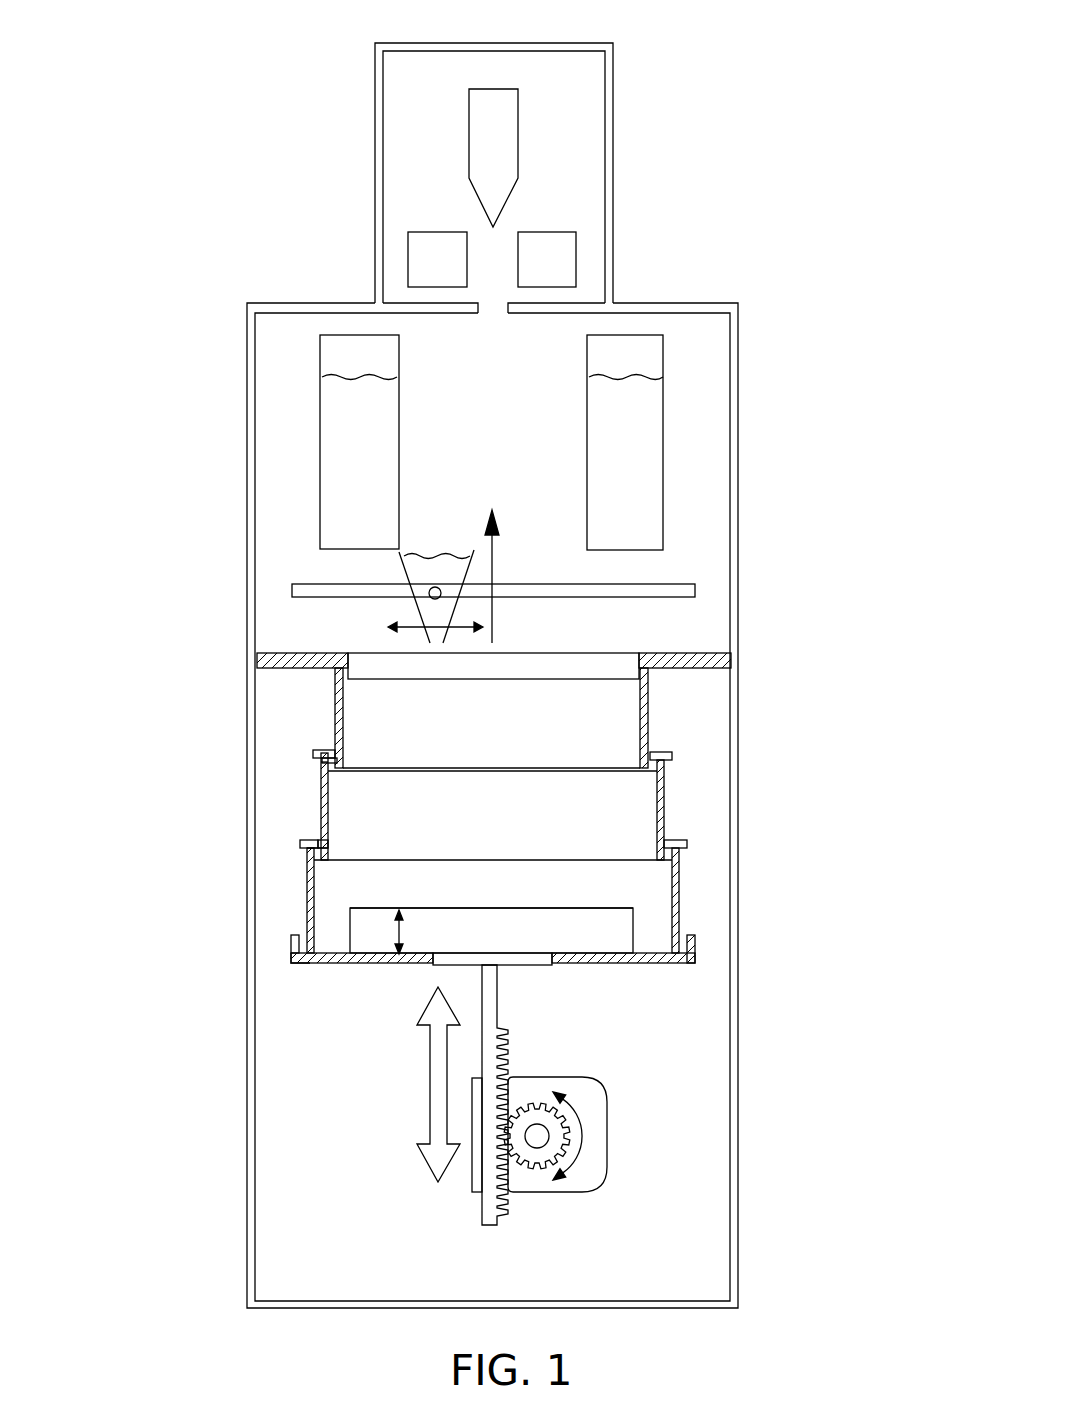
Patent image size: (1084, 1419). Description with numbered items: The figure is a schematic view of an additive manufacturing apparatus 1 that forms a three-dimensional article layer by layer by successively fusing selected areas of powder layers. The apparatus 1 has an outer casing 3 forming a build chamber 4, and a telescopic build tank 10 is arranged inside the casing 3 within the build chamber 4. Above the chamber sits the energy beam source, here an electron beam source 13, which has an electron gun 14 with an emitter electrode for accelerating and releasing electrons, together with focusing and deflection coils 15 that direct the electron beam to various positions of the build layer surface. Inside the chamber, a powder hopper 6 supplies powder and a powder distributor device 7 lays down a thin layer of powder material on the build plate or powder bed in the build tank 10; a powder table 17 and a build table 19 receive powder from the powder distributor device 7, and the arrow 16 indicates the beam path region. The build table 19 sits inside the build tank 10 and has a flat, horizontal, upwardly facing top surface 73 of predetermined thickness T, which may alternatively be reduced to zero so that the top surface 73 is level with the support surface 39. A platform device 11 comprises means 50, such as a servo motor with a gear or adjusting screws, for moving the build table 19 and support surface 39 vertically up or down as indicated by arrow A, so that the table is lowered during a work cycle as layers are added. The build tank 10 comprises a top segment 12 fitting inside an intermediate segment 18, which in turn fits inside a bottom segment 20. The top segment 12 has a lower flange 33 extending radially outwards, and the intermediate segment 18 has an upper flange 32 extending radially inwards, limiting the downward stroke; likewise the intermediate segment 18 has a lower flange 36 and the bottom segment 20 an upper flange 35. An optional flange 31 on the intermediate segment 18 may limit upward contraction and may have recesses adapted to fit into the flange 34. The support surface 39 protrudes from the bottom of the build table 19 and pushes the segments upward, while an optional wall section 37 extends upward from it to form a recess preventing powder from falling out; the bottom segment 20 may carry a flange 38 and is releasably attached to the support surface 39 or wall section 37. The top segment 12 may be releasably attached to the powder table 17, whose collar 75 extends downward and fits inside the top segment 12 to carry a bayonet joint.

The AM apparatus 1 is at (313, 106).
The outer casing 3 is at (248, 430).
The build chamber 4 is at (290, 371).
The powder hopper 6 is at (351, 518).
The powder distributor device 7 is at (428, 602).
The build tank 10 is at (291, 697).
The platform device 11 is at (535, 968).
The top segment 12 is at (648, 728).
The electron beam source 13 is at (590, 90).
The electron gun 14 is at (518, 150).
The deflection coils 15 is at (576, 268).
The movement direction arrow 16 is at (492, 567).
The powder table 17 is at (702, 620).
The intermediate segment 18 is at (664, 815).
The build table 19 is at (462, 925).
The bottom segment 20 is at (679, 900).
The flange 31 is at (318, 753).
The upper flange 32 is at (343, 755).
The lower flange 33 is at (323, 762).
The flange 34 is at (308, 842).
The upper flange 35 is at (322, 848).
The lower flange 36 is at (318, 853).
The wall section 37 is at (291, 958).
The flange 38 is at (296, 944).
The support surface 39 is at (663, 952).
The means for movement 50 is at (625, 1088).
The top surface 73 is at (543, 908).
The collar 75 is at (350, 658).
The arrow A is at (430, 1082).
The thickness T is at (412, 932).